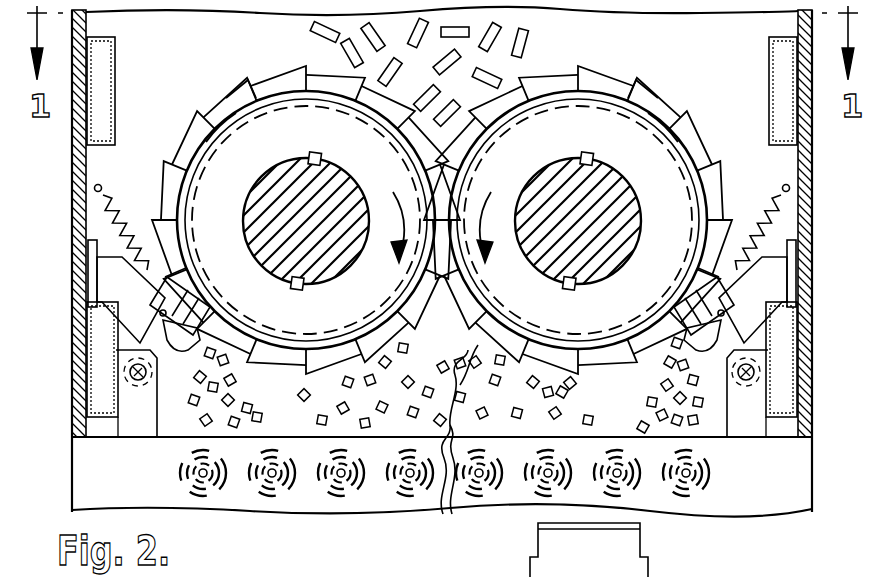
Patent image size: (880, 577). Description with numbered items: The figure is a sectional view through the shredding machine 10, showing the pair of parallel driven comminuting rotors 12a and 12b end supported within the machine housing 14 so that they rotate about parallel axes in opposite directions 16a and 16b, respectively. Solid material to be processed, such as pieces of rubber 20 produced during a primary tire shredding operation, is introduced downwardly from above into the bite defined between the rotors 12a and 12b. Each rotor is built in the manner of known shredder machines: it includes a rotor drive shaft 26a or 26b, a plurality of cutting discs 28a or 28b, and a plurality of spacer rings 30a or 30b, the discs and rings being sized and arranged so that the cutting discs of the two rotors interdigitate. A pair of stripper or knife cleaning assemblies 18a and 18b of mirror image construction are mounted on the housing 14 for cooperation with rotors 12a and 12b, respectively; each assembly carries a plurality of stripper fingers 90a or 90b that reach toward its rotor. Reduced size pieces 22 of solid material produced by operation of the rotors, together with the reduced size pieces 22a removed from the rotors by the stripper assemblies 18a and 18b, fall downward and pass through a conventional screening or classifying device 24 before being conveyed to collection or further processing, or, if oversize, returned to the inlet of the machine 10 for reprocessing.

The shredding machine 10 is at (340, 522).
The comminuting rotor 12a is at (240, 58).
The comminuting rotor 12b is at (657, 50).
The machine housing 14 is at (70, 345).
The direction of rotation 16a is at (393, 192).
The direction of rotation 16b is at (491, 192).
The stripper assembly 18a is at (164, 395).
The stripper assembly 18b is at (722, 395).
The pieces of rubber 20 is at (520, 35).
The reduced size pieces 22 is at (454, 443).
The reduced size pieces 22a is at (228, 380).
The screening or classifying device 24 is at (688, 506).
The rotor drive shaft 26a is at (333, 211).
The rotor drive shaft 26b is at (605, 211).
The cutting discs 28a is at (216, 96).
The cutting discs 28b is at (664, 88).
The spacer rings 30a is at (205, 134).
The spacer rings 30b is at (668, 108).
The stripper fingers 90a is at (201, 301).
The stripper fingers 90b is at (678, 300).